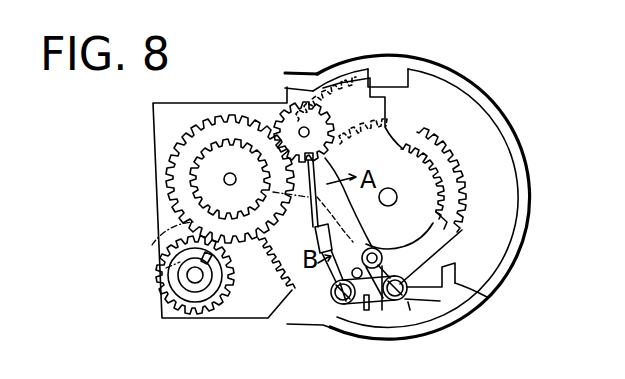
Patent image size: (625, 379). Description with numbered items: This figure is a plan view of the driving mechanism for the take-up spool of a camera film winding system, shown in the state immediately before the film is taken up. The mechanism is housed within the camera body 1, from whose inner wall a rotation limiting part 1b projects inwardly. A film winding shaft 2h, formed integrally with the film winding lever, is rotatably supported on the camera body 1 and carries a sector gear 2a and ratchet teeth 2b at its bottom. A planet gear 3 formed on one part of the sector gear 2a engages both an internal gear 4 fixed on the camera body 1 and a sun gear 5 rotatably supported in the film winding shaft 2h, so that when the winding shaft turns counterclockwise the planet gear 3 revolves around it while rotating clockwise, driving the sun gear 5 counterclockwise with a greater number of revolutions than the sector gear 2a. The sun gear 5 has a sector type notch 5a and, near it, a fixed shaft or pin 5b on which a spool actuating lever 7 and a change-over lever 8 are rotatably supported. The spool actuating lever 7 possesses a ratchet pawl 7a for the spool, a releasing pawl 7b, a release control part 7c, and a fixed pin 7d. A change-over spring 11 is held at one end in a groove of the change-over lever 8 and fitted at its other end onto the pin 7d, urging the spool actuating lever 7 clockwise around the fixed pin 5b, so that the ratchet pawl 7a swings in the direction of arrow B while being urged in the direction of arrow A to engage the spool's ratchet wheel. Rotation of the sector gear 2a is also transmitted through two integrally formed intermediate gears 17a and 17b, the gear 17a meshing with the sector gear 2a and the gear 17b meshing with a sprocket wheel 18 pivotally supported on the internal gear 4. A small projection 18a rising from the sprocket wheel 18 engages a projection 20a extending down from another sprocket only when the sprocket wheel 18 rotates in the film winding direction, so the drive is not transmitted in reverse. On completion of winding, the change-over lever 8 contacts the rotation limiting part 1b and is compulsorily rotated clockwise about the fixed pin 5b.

The camera body 1 is at (508, 125).
The rotation limiting part 1b is at (396, 78).
The sector gear 2a is at (353, 78).
The ratchet teeth 2b is at (413, 152).
The film winding shaft 2h is at (452, 228).
The planet gear 3 is at (298, 100).
The internal gear 4 is at (247, 318).
The sun gear 5 is at (450, 150).
The sector type notch 5a is at (343, 310).
The fixed shaft or pin 5b is at (392, 280).
The spool actuating lever 7 is at (432, 303).
The ratchet pawl 7a is at (306, 200).
The releasing pawl 7b is at (485, 296).
The release control part 7c is at (387, 310).
The fixed pin 7d is at (371, 248).
The change-over lever 8 is at (365, 312).
The change-over spring 11 is at (410, 303).
The intermediate gear 17a is at (238, 152).
The intermediate gear 17b is at (207, 115).
The sprocket wheel 18 is at (194, 299).
The small projection 18a is at (228, 295).
The projection 20a is at (160, 276).